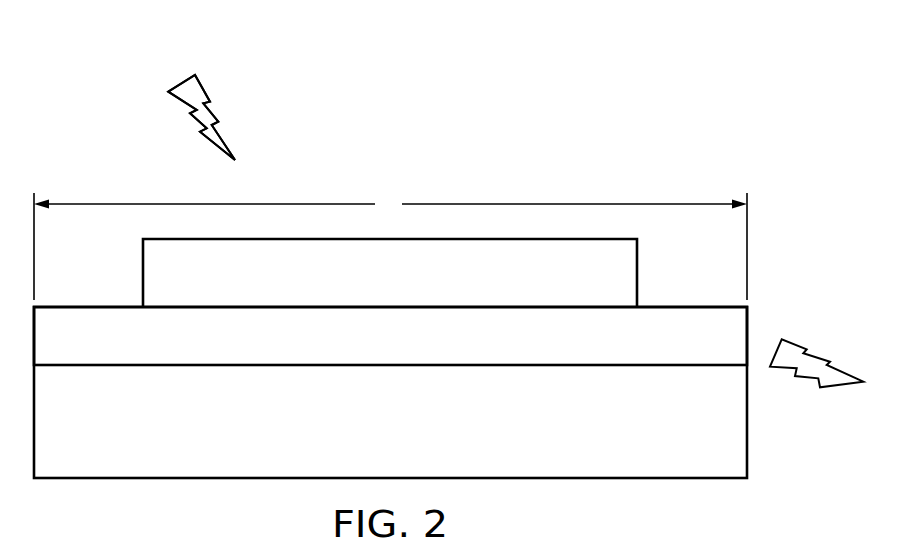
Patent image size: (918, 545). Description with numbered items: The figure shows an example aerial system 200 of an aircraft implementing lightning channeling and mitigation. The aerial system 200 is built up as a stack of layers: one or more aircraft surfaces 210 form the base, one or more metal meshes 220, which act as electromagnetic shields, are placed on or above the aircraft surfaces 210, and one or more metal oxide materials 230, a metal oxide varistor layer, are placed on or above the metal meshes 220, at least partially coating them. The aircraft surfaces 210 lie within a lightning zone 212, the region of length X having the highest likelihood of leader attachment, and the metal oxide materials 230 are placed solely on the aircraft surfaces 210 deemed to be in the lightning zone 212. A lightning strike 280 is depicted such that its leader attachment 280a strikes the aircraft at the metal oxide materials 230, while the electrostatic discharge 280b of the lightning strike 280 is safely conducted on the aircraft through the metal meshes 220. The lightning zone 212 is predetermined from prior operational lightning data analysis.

The aerial system 200 is at (562, 68).
The aircraft surfaces 210 is at (412, 436).
The lightning zone 212 is at (492, 203).
The metal meshes 220 is at (412, 349).
The metal oxide materials 230 is at (412, 287).
The lightning strike 280 is at (212, 114).
The leader attachment 280a is at (228, 143).
The electrostatic discharge 280b is at (814, 356).